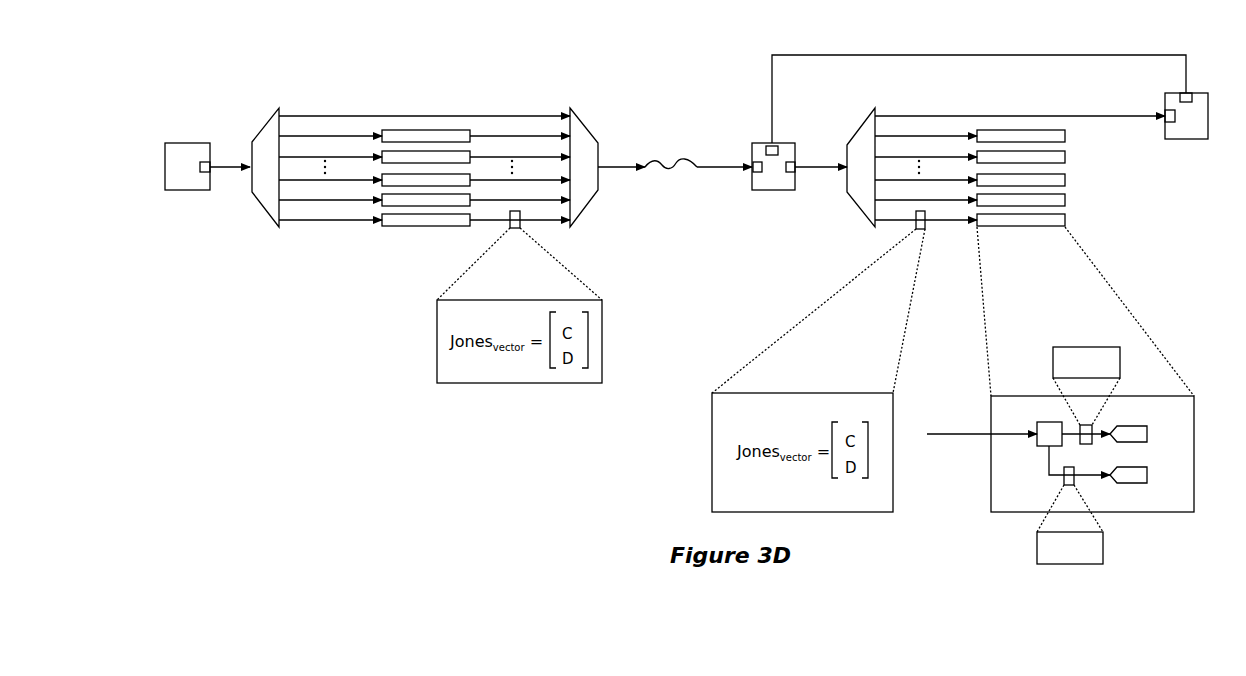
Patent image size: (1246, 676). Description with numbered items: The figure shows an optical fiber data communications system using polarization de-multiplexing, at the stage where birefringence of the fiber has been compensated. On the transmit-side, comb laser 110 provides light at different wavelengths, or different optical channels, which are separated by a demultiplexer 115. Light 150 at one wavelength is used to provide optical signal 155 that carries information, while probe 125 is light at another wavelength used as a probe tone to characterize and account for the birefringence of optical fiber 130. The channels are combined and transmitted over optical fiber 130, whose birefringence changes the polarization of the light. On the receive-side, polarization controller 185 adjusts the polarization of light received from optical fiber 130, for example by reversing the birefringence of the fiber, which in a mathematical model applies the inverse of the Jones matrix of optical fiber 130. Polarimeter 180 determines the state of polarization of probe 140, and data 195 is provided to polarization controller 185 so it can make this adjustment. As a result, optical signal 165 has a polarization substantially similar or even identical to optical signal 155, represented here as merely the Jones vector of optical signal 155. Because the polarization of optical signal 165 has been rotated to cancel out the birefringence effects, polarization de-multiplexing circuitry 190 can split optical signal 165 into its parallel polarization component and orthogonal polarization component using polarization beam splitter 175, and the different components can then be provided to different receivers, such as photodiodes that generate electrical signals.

The comb laser 110 is at (188, 143).
The demultiplexer 115 is at (267, 114).
The probe 125 is at (486, 116).
The optical fiber 130 is at (697, 170).
The probe 140 is at (1010, 116).
The light 150 is at (365, 225).
The optical signal 155 is at (543, 226).
The optical signal 165 is at (894, 227).
The polarization beam splitter 175 is at (1040, 447).
The polarimeter 180 is at (1198, 140).
The polarization controller 185 is at (783, 191).
The polarization de-multiplexing circuitry 190 is at (1056, 227).
The data 195 is at (1008, 55).